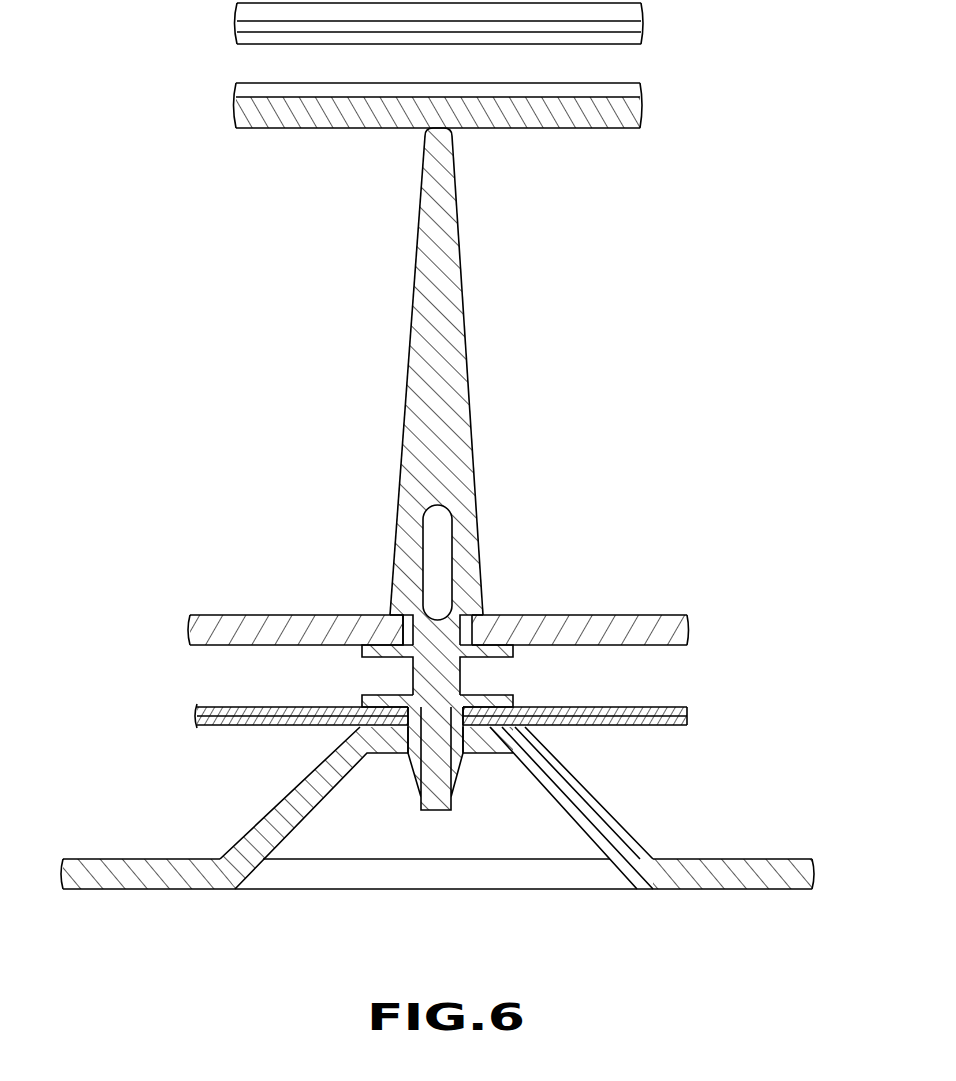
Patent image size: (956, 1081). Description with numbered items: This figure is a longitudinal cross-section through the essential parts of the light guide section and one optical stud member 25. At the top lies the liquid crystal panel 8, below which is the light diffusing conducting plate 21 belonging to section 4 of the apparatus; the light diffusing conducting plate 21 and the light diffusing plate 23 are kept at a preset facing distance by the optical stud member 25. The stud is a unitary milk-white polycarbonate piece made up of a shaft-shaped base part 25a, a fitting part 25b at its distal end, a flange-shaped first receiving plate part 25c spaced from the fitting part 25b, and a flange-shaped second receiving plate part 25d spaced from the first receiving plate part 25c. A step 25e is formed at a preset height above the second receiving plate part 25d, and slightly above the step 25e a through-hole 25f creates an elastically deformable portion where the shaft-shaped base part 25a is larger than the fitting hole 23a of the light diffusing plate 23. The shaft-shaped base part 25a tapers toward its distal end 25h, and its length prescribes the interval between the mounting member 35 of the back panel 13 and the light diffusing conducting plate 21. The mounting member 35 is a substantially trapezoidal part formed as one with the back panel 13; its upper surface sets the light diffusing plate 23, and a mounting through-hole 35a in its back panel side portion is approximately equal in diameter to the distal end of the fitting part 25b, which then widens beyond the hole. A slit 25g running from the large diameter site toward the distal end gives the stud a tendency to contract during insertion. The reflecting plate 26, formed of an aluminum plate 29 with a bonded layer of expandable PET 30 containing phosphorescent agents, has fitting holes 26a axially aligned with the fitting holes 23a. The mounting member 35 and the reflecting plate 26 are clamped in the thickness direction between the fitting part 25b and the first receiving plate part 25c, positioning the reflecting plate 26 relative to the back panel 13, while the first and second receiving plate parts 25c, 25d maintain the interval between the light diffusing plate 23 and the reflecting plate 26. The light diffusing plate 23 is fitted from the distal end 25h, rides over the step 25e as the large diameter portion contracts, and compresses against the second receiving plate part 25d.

The liquid crystal panel 8 is at (642, 14).
The section 4 is at (627, 88).
The light diffusing conducting plate 21 is at (620, 117).
The optical stud member 25 is at (440, 540).
The distal end 25h is at (426, 129).
The shaft-shaped base part 25a is at (418, 404).
The through-hole 25f is at (420, 517).
The step 25e is at (343, 617).
The second receiving plate part 25d is at (385, 652).
The first receiving plate part 25c is at (487, 697).
The slit 25g is at (427, 813).
The fitting part 25b is at (447, 812).
The light diffusing plate 23 is at (438, 601).
The fitting hole 23a is at (464, 616).
The reflecting plate 26 is at (517, 812).
The layer of expandable PET 30 is at (667, 705).
The plate 29 is at (667, 723).
The fitting hole 26a is at (453, 810).
The mounting member 35 is at (436, 840).
The mounting through-hole 35a is at (412, 795).
The back panel 13 is at (707, 873).